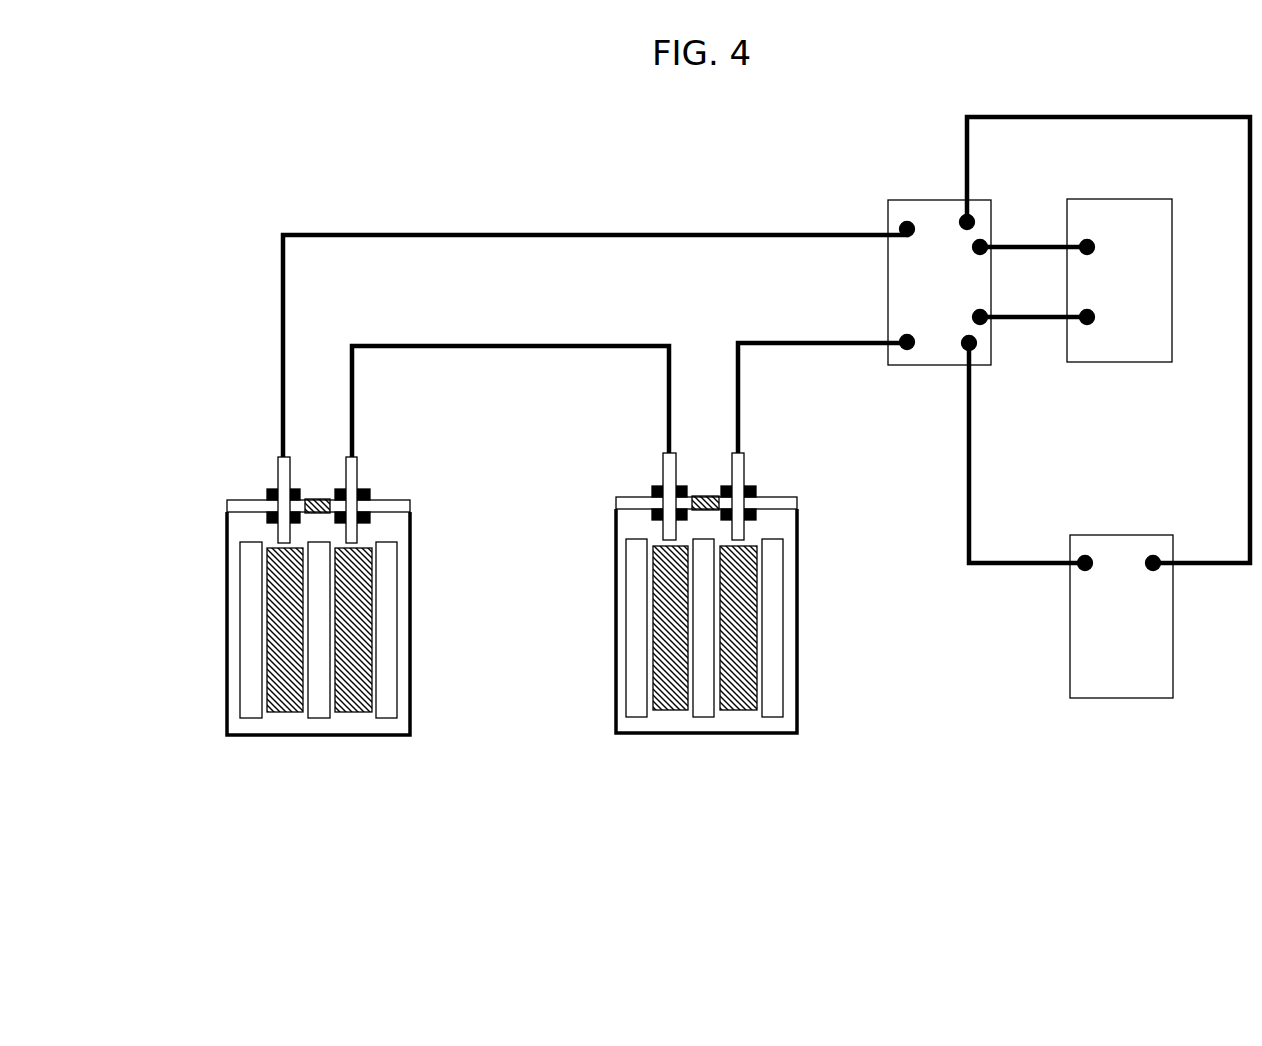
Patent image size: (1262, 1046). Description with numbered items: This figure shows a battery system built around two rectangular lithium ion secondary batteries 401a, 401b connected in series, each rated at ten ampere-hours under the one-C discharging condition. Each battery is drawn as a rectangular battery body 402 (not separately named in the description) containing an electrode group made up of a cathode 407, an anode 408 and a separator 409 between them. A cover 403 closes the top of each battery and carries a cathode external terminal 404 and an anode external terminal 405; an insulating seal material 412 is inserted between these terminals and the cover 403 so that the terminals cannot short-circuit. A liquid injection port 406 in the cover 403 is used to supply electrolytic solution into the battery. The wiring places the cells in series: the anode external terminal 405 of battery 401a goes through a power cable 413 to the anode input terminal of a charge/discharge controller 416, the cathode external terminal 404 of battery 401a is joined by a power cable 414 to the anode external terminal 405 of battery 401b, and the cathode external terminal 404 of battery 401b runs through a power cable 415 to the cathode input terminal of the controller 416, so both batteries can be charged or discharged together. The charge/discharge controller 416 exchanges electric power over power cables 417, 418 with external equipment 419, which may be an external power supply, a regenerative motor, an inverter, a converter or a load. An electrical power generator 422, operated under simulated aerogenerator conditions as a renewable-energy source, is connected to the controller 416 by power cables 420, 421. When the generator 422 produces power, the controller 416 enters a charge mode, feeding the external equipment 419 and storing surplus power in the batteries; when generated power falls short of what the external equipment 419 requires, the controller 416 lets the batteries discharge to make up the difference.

The lithium ion secondary battery 401a is at (743, 860).
The lithium ion secondary battery 401b is at (347, 863).
The case 402 is at (228, 605).
The cover 403 is at (617, 500).
The cathode external terminal 404 is at (277, 462).
The anode external terminal 405 is at (358, 472).
The liquid injection port 406 is at (316, 497).
The cathode 407 is at (290, 712).
The anode 408 is at (355, 712).
The separator 409 is at (250, 660).
The insulating seal material 412 is at (267, 497).
The power cable 413 is at (780, 347).
The power cable 414 is at (543, 342).
The power cable 415 is at (533, 230).
The charge/discharge controller 416 is at (939, 282).
The power cable 417 is at (1022, 322).
The power cable 418 is at (1030, 243).
The external equipment 419 is at (1119, 280).
The power cable 420 is at (973, 435).
The power cable 421 is at (1243, 372).
The electrical power generator 422 is at (1121, 616).